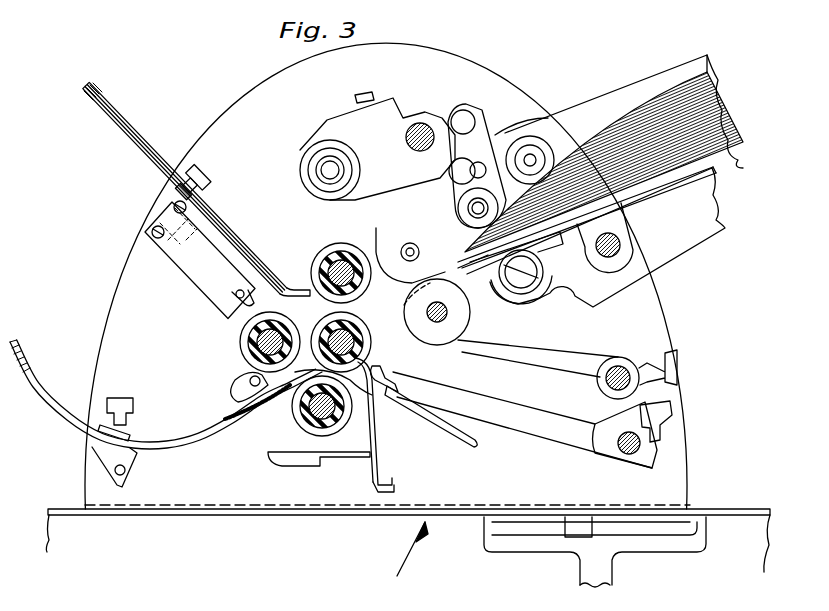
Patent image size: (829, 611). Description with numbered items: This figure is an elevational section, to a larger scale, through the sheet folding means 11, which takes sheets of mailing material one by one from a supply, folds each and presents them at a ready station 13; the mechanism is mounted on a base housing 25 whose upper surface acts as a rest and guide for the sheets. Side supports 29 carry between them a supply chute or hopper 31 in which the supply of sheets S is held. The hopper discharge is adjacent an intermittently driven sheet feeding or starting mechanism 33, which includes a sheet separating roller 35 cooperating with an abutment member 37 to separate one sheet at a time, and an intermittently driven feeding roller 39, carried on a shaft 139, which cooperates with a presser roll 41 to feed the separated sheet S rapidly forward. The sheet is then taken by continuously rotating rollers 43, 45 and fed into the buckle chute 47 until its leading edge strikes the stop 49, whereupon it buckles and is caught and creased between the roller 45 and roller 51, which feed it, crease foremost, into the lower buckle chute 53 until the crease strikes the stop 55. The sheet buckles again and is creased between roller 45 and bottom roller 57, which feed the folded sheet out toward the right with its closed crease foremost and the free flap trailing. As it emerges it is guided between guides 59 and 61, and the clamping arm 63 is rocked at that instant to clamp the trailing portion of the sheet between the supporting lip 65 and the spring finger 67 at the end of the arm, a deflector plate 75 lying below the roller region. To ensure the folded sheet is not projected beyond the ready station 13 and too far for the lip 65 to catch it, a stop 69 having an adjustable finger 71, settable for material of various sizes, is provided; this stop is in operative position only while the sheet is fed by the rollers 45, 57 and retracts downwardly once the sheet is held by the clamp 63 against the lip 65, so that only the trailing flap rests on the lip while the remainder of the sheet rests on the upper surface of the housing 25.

The sheet folding means 11 is at (508, 70).
The ready station 13 is at (405, 561).
The base housing 25 is at (60, 507).
The side supports 29 is at (655, 323).
The supply chute or hopper 31 is at (725, 153).
The sheet feeding or starting mechanism 33 is at (496, 121).
The sheet separating roller 35 is at (486, 252).
The abutment member 37 is at (545, 268).
The feeding roller 39 is at (462, 325).
The roller shaft 139 is at (442, 321).
The presser roll 41 is at (380, 248).
The roller 43 is at (330, 250).
The roller 45 is at (356, 370).
The buckle chute 47 is at (242, 250).
The stop 49 is at (202, 197).
The roller 51 is at (246, 337).
The lower buckle chute 53 is at (192, 438).
The stop 55 is at (160, 460).
The bottom roller 57 is at (300, 424).
The guide 59 is at (448, 428).
The guide 61 is at (358, 449).
The clamping arm 63 is at (483, 404).
The supporting lip 65 is at (377, 489).
The spring finger 67 is at (382, 366).
The stop 69 is at (527, 553).
The adjustable finger 71 is at (570, 515).
The deflector plate 75 is at (276, 458).
The sheet S is at (612, 130).